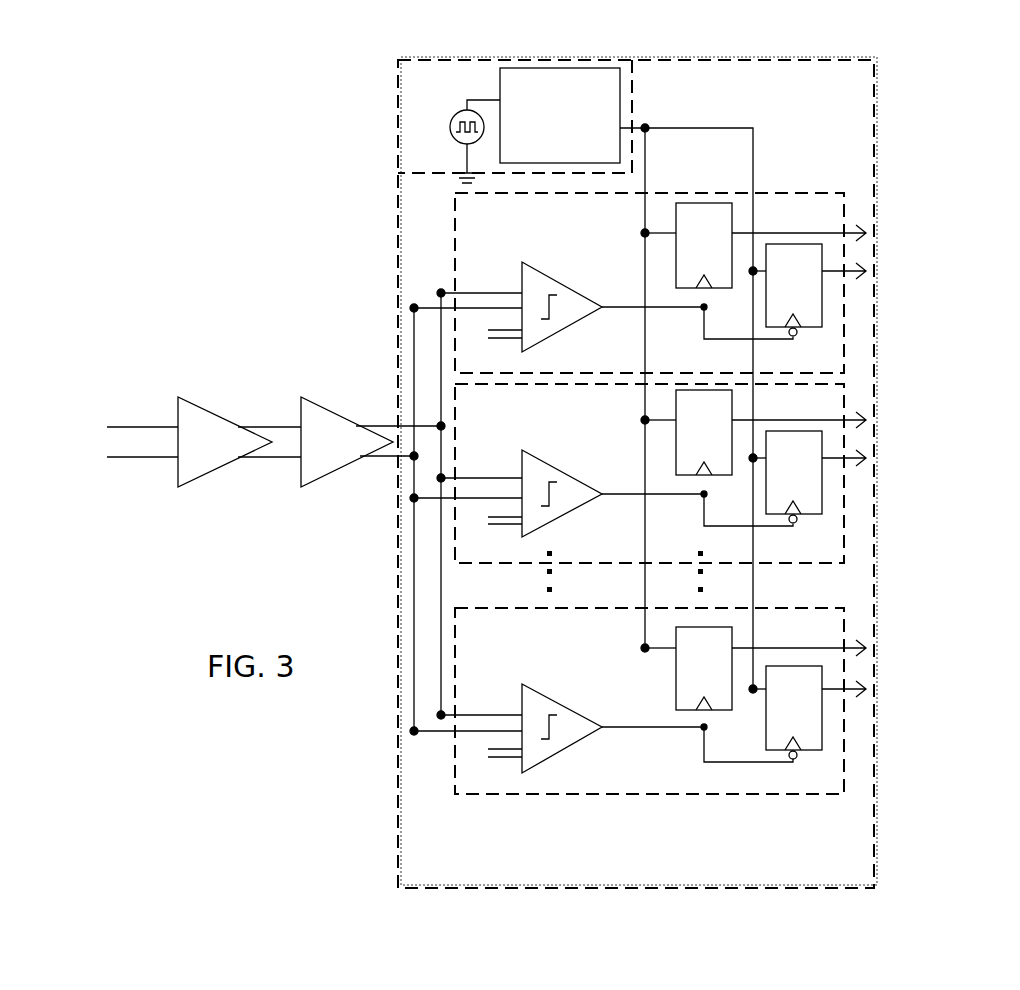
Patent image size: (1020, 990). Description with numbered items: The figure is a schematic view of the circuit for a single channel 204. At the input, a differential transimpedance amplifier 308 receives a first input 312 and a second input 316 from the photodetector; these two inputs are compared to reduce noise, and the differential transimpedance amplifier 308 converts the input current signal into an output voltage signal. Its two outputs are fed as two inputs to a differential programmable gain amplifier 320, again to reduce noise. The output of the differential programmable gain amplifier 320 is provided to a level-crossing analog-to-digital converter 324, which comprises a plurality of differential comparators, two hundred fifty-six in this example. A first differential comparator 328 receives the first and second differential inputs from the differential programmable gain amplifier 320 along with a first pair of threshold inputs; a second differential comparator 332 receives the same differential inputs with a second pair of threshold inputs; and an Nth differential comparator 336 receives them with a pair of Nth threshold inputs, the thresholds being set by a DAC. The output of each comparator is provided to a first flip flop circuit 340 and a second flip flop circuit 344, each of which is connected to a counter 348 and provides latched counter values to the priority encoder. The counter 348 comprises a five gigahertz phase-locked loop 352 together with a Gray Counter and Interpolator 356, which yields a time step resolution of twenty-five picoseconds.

The channel 204 is at (282, 241).
The differential transimpedance amplifier 308 is at (228, 462).
The first input 312 is at (147, 427).
The second input 316 is at (160, 457).
The differential programmable gain amplifier 320 is at (356, 420).
The level-crossing analog-to-digital converter 324 is at (385, 835).
The first differential comparator 328 is at (522, 282).
The second differential comparator 332 is at (522, 470).
The Nth differential comparator 336 is at (522, 705).
The first flip flop circuit 340 is at (716, 205).
The second flip flop circuit 344 is at (812, 250).
The counter 348 is at (450, 60).
The phase-locked loop 352 is at (450, 122).
The Gray Counter and Interpolator 356 is at (567, 78).